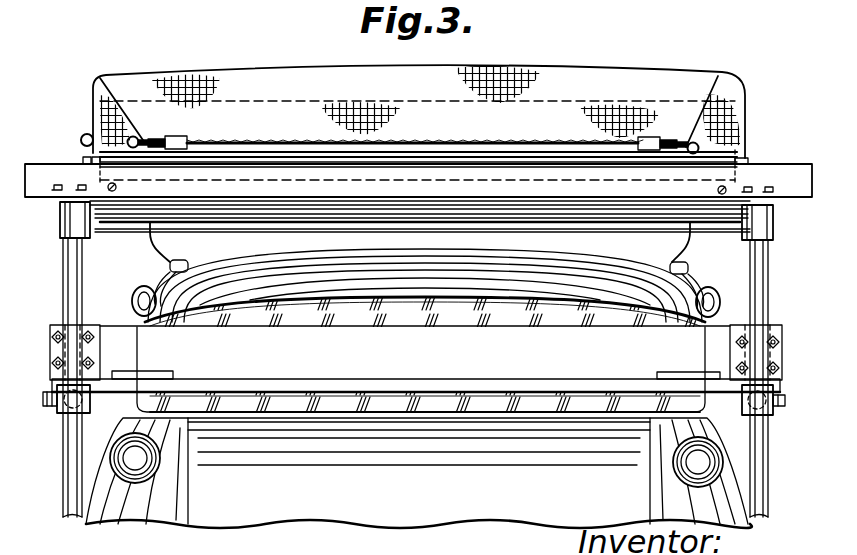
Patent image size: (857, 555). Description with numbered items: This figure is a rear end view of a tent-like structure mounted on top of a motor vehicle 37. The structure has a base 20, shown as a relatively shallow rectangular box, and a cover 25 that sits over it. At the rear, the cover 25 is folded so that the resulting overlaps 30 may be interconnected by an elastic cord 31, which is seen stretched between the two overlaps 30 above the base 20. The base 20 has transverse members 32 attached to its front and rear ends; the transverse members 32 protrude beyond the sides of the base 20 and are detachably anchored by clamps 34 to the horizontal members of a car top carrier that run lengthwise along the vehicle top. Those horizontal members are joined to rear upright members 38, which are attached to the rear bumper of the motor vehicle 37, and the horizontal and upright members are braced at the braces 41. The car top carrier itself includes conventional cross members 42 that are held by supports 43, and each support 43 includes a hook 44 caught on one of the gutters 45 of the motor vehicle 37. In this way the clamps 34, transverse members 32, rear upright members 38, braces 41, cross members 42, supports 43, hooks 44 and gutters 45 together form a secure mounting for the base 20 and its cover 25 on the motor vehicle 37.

The base 20 is at (278, 122).
The cover 25 is at (607, 72).
The overlaps 30 is at (132, 138).
The elastic cord 31 is at (503, 142).
The transverse members 32 is at (767, 173).
The clamps 34 is at (60, 208).
The motor vehicle 37 is at (323, 487).
The rear upright members 38 is at (70, 291).
The braces 41 is at (60, 413).
The cross members 42 is at (150, 240).
The supports 43 is at (170, 258).
The hooks 44 is at (152, 290).
The gutters 45 is at (133, 298).